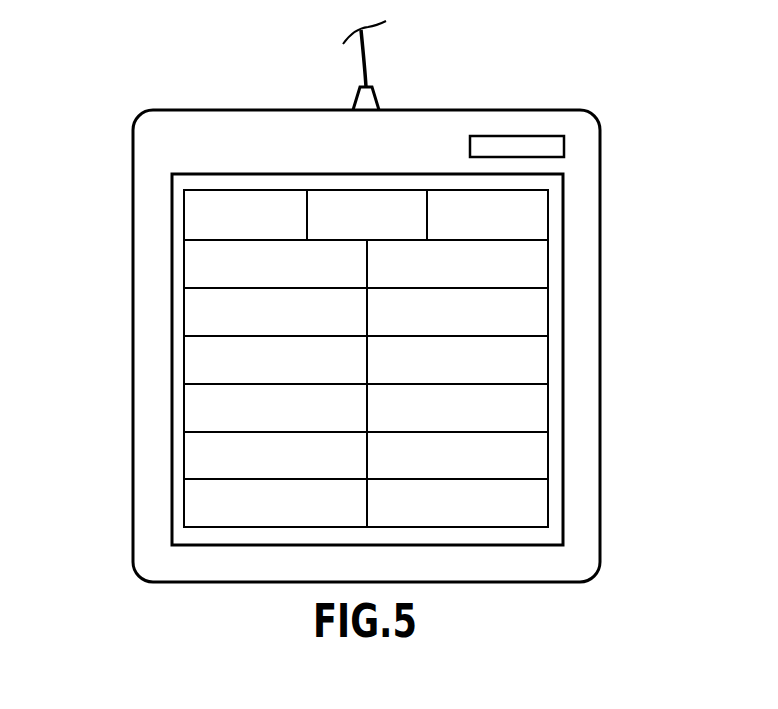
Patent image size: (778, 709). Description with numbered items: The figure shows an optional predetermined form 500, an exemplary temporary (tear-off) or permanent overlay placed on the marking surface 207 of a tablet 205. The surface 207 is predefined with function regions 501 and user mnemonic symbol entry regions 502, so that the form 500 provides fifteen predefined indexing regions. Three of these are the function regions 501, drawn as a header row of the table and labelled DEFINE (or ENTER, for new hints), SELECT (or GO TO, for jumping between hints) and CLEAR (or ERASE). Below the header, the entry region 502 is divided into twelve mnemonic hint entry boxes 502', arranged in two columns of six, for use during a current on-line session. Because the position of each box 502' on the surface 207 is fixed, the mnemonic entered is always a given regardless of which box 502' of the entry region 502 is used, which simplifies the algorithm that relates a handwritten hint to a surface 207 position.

The tablet 205 is at (233, 110).
The surface 207 is at (160, 402).
The form 500 is at (184, 313).
The function regions 501 is at (123, 182).
The user mnemonic symbol entry regions 502 is at (433, 386).
The box 502' is at (533, 462).